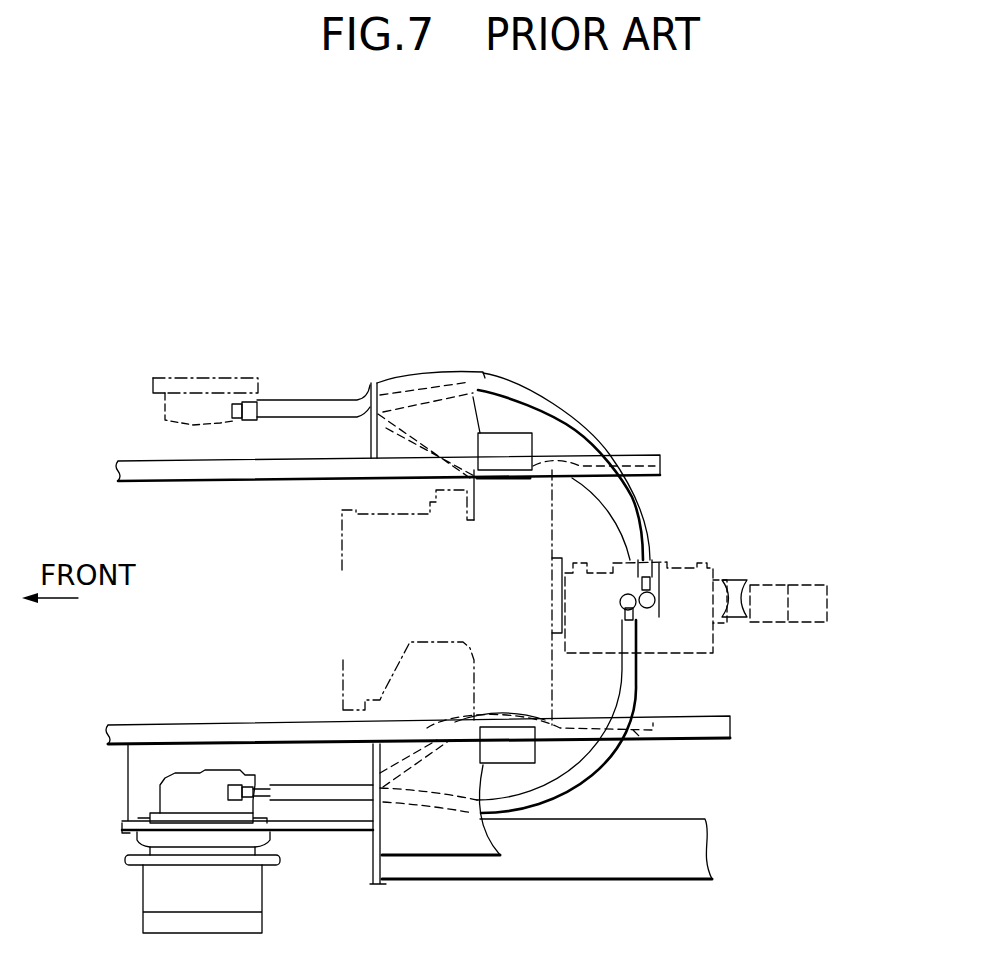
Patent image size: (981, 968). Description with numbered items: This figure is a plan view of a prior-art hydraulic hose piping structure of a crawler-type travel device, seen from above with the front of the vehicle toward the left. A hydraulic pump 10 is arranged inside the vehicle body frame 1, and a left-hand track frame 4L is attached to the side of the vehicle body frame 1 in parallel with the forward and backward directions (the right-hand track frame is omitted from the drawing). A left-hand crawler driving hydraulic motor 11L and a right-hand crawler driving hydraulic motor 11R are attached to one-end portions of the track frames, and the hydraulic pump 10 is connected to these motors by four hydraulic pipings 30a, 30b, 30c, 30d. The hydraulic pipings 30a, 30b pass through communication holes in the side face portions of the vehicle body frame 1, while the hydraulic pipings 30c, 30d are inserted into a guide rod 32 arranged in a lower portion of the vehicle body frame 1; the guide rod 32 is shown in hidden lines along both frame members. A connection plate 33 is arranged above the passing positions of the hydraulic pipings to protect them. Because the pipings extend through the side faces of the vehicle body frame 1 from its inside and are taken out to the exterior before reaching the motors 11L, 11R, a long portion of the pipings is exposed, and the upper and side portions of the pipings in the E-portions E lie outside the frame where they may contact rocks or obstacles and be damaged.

The vehicle body frame 1 is at (703, 740).
The left-hand track frame 4L is at (422, 867).
The hydraulic pump 10 is at (680, 567).
The left-hand crawler driving hydraulic motor 11L is at (163, 795).
The right-hand crawler driving hydraulic motor 11R is at (163, 392).
The hydraulic piping 30a is at (373, 787).
The hydraulic piping 30b is at (368, 413).
The hydraulic piping 30c is at (525, 807).
The hydraulic piping 30d is at (533, 393).
The guide rod 32 is at (640, 450).
The connection plate 33 is at (383, 383).
The E-portions E is at (573, 413).